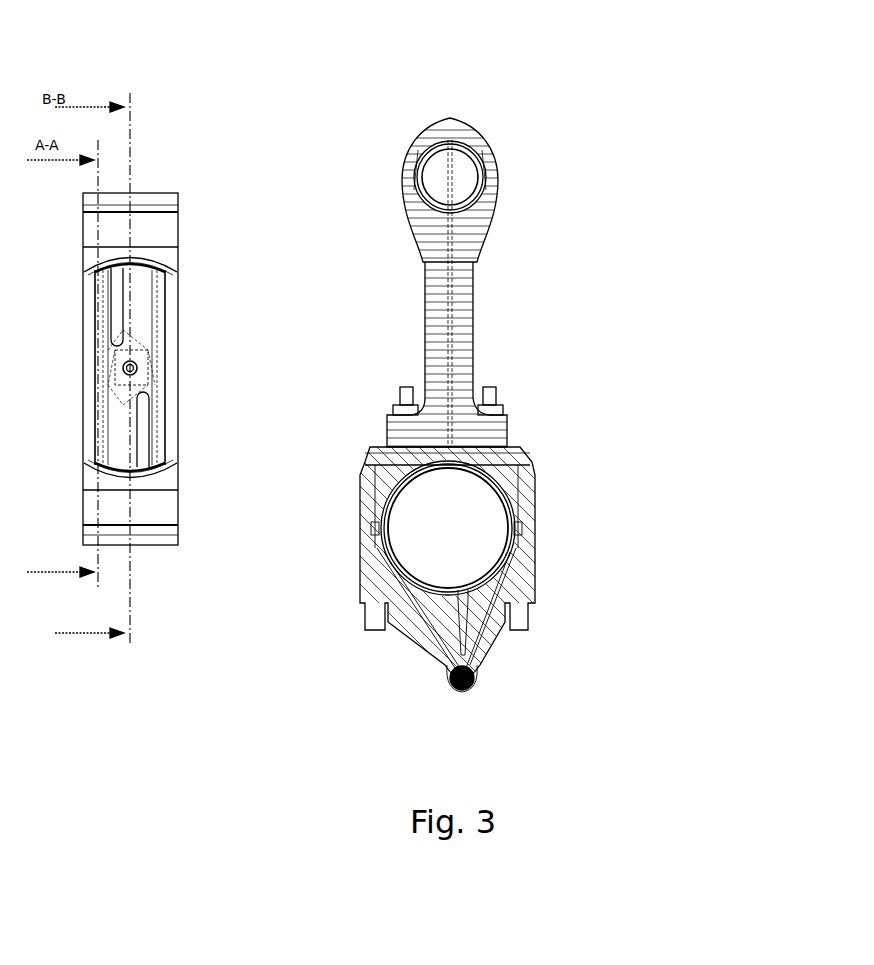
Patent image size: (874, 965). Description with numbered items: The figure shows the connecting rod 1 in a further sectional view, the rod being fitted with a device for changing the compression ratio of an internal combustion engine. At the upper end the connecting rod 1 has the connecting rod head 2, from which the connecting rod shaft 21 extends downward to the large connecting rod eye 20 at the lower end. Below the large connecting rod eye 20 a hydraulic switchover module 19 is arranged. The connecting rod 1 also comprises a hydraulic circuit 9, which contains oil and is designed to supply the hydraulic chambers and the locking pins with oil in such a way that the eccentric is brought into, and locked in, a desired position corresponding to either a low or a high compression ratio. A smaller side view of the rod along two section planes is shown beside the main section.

The connecting rod 1 is at (470, 106).
The connecting rod head 2 is at (500, 175).
The connecting rod shaft 21 is at (474, 313).
The hydraulic circuit 9 is at (522, 490).
The large connecting rod eye 20 is at (497, 570).
The hydraulic switchover module 19 is at (483, 677).